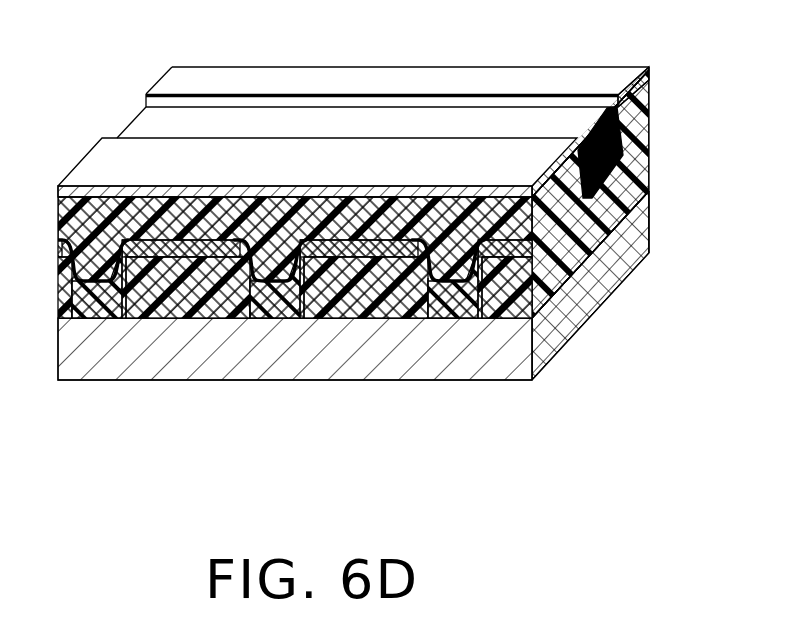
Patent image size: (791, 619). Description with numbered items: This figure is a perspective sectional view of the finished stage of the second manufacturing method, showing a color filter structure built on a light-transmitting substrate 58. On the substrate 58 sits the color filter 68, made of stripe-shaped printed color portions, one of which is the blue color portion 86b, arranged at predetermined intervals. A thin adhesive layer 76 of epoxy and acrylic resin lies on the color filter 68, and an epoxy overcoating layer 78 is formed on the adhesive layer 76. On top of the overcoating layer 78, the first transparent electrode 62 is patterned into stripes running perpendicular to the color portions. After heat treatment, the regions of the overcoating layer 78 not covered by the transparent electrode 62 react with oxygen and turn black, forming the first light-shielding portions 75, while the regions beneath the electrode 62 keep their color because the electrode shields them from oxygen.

The light-transmitting substrate 58 is at (647, 245).
The first transparent electrode 62 is at (503, 153).
The color filter 68 is at (658, 202).
The first light-shielding portion 75 is at (650, 97).
The adhesive layer 76 is at (647, 127).
The overcoating layer 78 is at (597, 202).
The color portion 86b is at (650, 167).